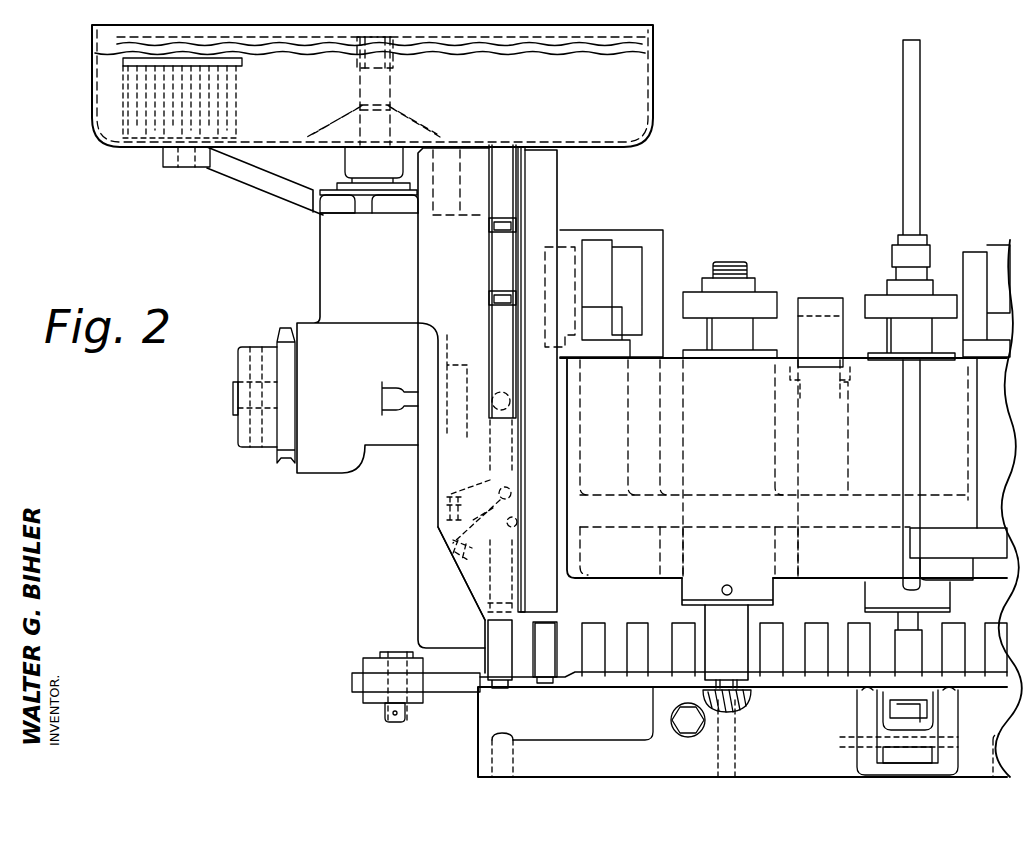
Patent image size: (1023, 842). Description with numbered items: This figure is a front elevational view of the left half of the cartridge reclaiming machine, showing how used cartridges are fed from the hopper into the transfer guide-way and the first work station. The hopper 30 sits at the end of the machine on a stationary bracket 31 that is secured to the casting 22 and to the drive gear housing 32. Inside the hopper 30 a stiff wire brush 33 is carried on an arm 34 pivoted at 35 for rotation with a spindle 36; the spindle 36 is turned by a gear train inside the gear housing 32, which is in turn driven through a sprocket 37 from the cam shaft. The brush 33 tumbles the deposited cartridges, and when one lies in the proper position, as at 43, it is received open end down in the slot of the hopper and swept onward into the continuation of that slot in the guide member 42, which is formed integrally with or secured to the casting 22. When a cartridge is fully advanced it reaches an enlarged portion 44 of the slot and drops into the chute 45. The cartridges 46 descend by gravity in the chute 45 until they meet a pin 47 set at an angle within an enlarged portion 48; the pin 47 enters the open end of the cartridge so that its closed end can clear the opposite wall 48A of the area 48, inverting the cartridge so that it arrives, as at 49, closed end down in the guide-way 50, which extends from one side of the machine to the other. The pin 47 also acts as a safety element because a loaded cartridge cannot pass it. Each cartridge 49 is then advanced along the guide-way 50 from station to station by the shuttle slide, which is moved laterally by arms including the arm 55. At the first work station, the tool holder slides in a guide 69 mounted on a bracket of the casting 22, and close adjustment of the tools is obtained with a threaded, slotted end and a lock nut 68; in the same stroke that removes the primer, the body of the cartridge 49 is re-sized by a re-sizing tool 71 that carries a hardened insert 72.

The casting 22 is at (593, 763).
The hopper 30 is at (92, 69).
The stationary bracket 31 is at (250, 183).
The drive gear housing 32 is at (318, 268).
The wire brush 33 is at (236, 101).
The arm 34 is at (244, 62).
The pivot 35 is at (398, 45).
The spindle 36 is at (390, 83).
The sprocket 37 is at (278, 452).
The guide member 42 is at (440, 243).
The cartridge in proper position 43 is at (443, 166).
The enlarged portion of slot 44 is at (525, 147).
The chute 45 is at (522, 216).
The cartridges 46 is at (500, 270).
The pin 47 is at (522, 500).
The enlarged portion 48 is at (453, 468).
The opposite wall 48A is at (438, 508).
The cartridge 49 is at (497, 633).
The guide-way 50 is at (520, 688).
The arm 55 is at (810, 300).
The lock nut 68 is at (752, 280).
The guide 69 is at (682, 592).
The re-sizing tool 71 is at (733, 623).
The hardened insert 72 is at (729, 585).